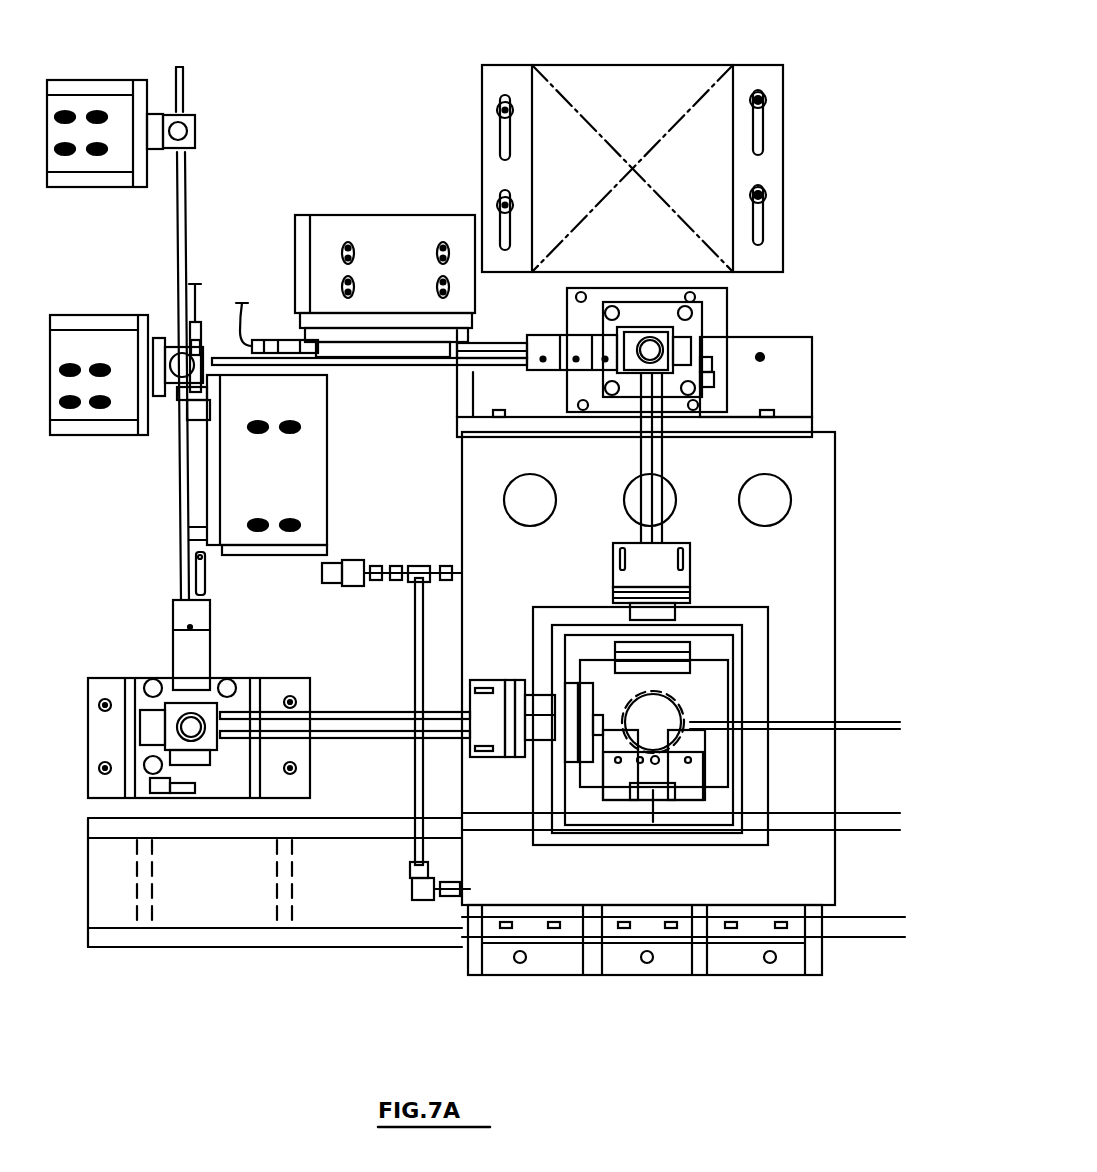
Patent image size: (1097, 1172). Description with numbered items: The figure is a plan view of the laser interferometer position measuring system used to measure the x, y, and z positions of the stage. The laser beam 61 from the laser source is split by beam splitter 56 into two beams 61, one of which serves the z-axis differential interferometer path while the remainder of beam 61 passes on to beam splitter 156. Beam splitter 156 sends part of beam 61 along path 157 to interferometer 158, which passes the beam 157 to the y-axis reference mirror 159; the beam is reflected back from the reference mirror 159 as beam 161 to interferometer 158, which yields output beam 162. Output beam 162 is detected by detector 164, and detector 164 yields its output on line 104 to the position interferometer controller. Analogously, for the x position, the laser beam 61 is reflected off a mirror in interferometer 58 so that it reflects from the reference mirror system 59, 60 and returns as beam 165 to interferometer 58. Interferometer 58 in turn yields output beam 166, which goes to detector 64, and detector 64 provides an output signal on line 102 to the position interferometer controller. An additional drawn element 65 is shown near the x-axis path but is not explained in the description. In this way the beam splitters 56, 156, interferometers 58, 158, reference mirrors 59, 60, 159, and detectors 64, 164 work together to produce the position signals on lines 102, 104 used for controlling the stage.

The beam splitter 56 is at (193, 120).
The interferometer 58 is at (205, 700).
The reference mirror system 59 is at (505, 680).
The reference mirror system 60 is at (568, 742).
The beam 61 is at (186, 75).
The detector 64 is at (320, 490).
The horizontal rod 65 is at (355, 740).
The line 102 is at (197, 295).
The line 104 is at (240, 325).
The beam splitter 156 is at (175, 341).
The path 157 is at (340, 368).
The interferometer 158 is at (680, 335).
The y-axis reference mirror 159 is at (690, 572).
The beam 161 is at (663, 455).
The output beam 162 is at (497, 340).
The detector 164 is at (405, 345).
The beam 165 is at (380, 705).
The output beam 166 is at (205, 575).